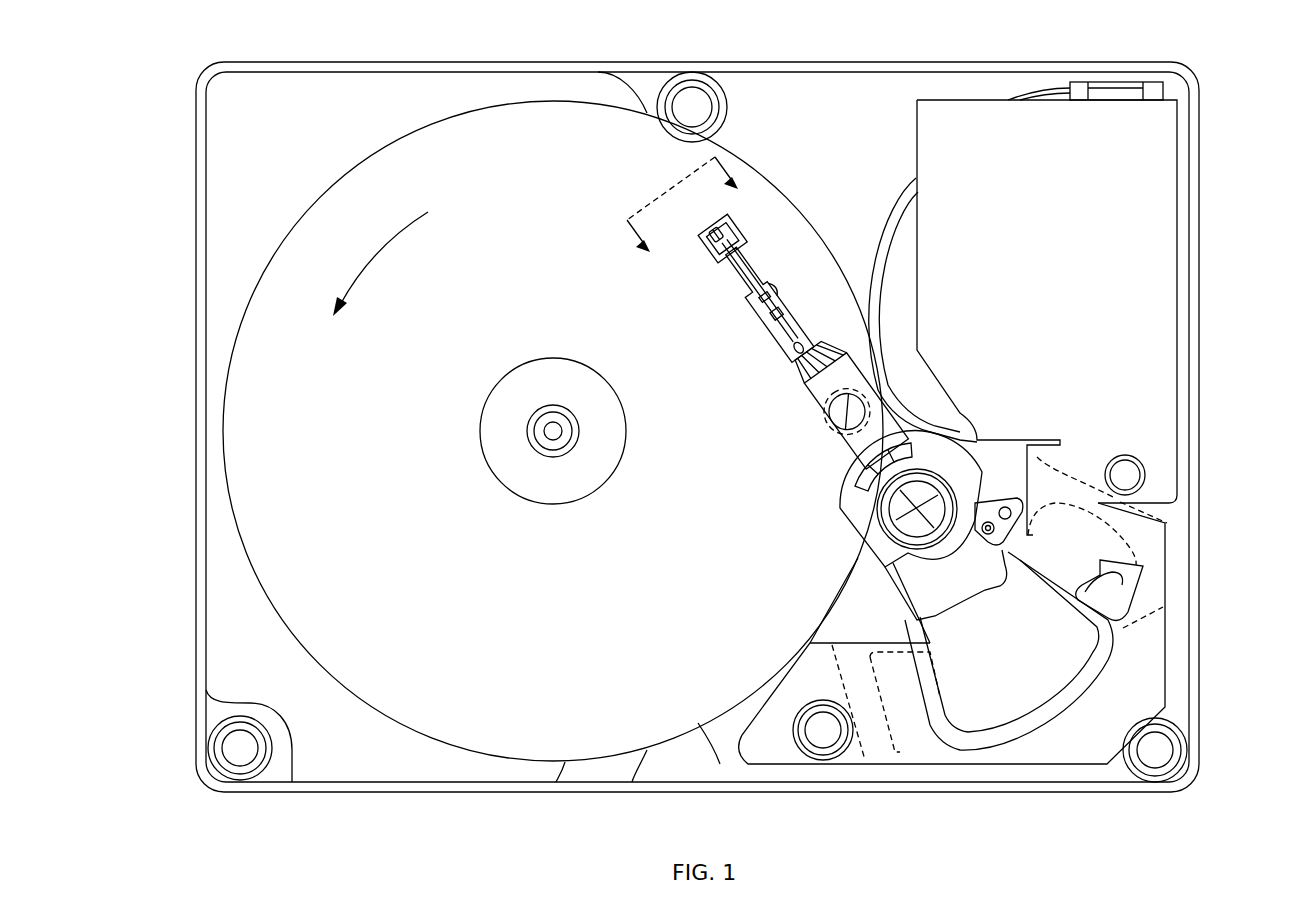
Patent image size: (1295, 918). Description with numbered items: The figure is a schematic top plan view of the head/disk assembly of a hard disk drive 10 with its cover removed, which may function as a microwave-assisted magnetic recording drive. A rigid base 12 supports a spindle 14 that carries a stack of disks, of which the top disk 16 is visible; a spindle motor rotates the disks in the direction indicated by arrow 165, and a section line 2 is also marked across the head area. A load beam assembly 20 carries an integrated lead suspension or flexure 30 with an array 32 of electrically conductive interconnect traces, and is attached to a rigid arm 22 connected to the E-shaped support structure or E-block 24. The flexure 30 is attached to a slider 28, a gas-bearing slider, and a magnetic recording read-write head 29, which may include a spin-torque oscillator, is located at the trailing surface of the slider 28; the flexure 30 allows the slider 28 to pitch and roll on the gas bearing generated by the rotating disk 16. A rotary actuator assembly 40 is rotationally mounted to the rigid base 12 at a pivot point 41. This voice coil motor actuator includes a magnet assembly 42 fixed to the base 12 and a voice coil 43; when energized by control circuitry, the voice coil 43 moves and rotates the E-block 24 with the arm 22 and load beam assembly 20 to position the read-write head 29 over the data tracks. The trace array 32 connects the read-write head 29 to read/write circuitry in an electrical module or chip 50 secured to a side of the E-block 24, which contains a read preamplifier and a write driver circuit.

The hard disk drive 10 is at (158, 78).
The rigid base 12 is at (413, 795).
The spindle 14 is at (507, 373).
The top disk 16 is at (565, 762).
The arrow 165 is at (365, 258).
The section line 2- 2 is at (690, 213).
The load beam assembly 20 is at (795, 404).
The rigid arm 22 is at (826, 420).
The E-block 24 is at (850, 497).
The slider 28 is at (752, 240).
The read-write head 29 is at (727, 236).
The flexure 30 is at (750, 256).
The array of interconnect traces 32 is at (768, 294).
The rotary actuator assembly 40 is at (850, 594).
The pivot point 41 is at (914, 509).
The magnet assembly 42 is at (1056, 523).
The voice coil 43 is at (1115, 630).
The electrical module or chip 50 is at (983, 455).